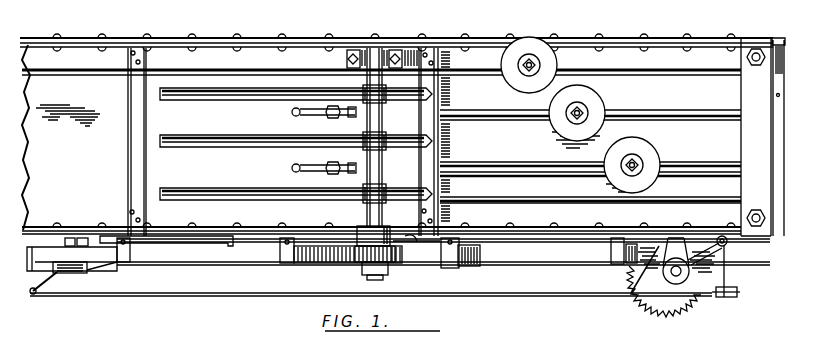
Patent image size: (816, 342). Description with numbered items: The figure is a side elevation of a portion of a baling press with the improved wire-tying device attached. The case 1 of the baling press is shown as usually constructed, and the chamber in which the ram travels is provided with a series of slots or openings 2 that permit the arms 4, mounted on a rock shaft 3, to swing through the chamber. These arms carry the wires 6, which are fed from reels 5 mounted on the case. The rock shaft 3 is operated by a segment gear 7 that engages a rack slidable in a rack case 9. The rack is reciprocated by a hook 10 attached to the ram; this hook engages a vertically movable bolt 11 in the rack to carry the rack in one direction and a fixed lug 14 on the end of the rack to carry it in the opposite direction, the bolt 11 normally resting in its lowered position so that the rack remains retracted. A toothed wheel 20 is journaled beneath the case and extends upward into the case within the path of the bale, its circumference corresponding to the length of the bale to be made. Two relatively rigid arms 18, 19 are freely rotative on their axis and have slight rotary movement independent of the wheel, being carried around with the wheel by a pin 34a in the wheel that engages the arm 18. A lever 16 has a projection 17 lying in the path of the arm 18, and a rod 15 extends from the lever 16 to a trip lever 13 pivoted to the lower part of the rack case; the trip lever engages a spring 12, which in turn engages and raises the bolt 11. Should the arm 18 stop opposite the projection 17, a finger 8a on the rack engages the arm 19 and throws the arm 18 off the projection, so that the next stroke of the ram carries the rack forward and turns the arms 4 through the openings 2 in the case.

The case of the baling press 1 is at (95, 88).
The slots or openings 2 is at (272, 90).
The rock shaft 3 is at (411, 60).
The arms 4 is at (350, 88).
The reels 5 is at (536, 42).
The wires 6 is at (480, 90).
The segment gear 7 is at (332, 258).
The finger 8a is at (461, 262).
The rack case 9 is at (232, 258).
The hook 10 is at (200, 243).
The bolt 11 is at (84, 238).
The spring 12 is at (68, 273).
The trip lever 13 is at (40, 289).
The fixed lug 14 is at (70, 237).
The rod 15 is at (266, 296).
The lever 16 is at (728, 298).
The projection 17 is at (710, 296).
The arm 18 is at (722, 266).
The arm 19 is at (632, 292).
The toothed wheel 20 is at (664, 303).
The pin 34a is at (724, 250).